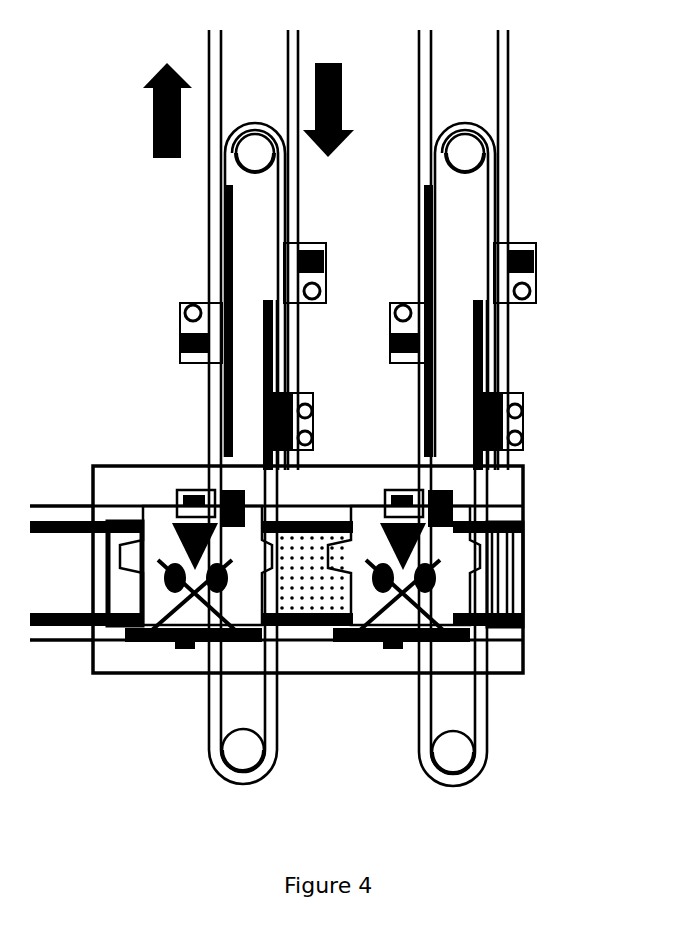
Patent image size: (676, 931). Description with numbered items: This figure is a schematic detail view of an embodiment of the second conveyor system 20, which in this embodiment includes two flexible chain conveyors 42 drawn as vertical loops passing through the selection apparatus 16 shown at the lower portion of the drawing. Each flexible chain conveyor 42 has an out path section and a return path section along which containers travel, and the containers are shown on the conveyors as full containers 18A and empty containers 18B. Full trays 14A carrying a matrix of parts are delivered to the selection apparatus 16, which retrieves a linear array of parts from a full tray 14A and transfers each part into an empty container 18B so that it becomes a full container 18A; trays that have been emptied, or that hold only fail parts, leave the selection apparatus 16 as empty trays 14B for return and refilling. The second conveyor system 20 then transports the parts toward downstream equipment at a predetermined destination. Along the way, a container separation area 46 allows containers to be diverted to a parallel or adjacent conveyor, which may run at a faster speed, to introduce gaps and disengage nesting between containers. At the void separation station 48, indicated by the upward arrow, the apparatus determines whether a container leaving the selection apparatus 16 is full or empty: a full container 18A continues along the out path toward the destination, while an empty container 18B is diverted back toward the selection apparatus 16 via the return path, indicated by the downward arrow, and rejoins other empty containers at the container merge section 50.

The full tray 14A is at (523, 537).
The empty tray 14B is at (55, 504).
The selection apparatus 16 is at (310, 518).
The full container 18A is at (180, 334).
The empty container 18B is at (352, 270).
The second conveyor system 20 is at (607, 160).
The flexible chain conveyor 42 is at (507, 95).
The container separation area 46 is at (170, 402).
The void separation station 48 is at (140, 202).
The container merge section 50 is at (357, 186).